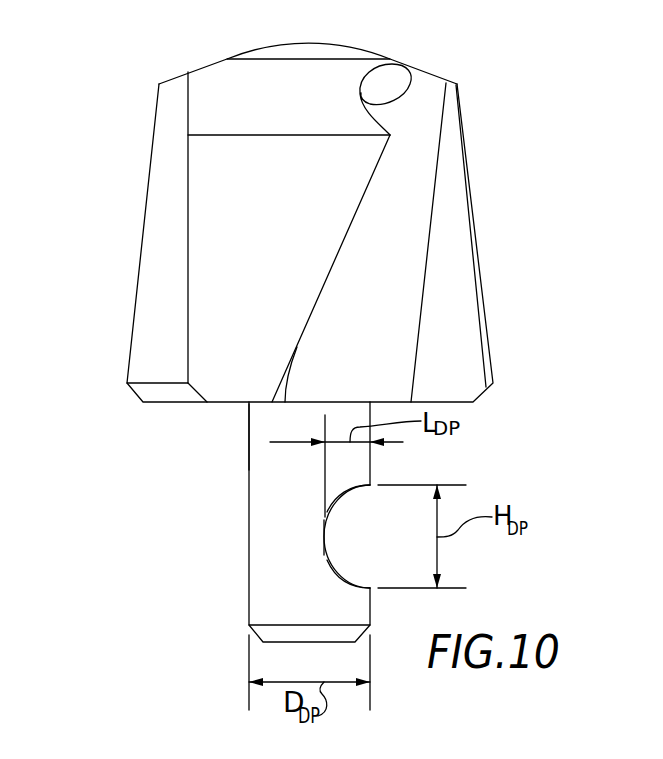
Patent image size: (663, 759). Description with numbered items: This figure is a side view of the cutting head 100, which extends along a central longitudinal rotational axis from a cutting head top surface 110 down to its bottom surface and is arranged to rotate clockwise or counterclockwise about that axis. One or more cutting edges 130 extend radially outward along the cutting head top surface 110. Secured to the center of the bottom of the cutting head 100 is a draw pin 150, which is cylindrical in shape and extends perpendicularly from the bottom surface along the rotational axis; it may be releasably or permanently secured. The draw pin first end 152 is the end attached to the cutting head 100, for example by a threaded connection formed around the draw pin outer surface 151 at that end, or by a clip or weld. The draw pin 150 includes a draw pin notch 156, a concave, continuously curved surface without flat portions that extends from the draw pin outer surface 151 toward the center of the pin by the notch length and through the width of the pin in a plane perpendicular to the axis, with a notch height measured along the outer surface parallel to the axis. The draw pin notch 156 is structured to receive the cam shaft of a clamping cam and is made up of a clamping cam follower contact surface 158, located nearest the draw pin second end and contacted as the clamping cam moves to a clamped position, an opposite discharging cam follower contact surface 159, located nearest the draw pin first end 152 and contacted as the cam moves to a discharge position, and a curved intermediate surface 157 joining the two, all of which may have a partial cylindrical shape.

The cutting head 100 is at (112, 192).
The cutting head top surface 110 is at (307, 45).
The cutting edge 130 is at (404, 93).
The draw pin 150 is at (225, 580).
The draw pin outer surface 151 is at (273, 500).
The draw pin first end 152 is at (248, 435).
The draw pin notch 156 is at (328, 525).
The intermediate surface 157 is at (327, 542).
The clamping cam follower contact surface 158 is at (365, 586).
The discharging cam follower contact surface 159 is at (350, 490).